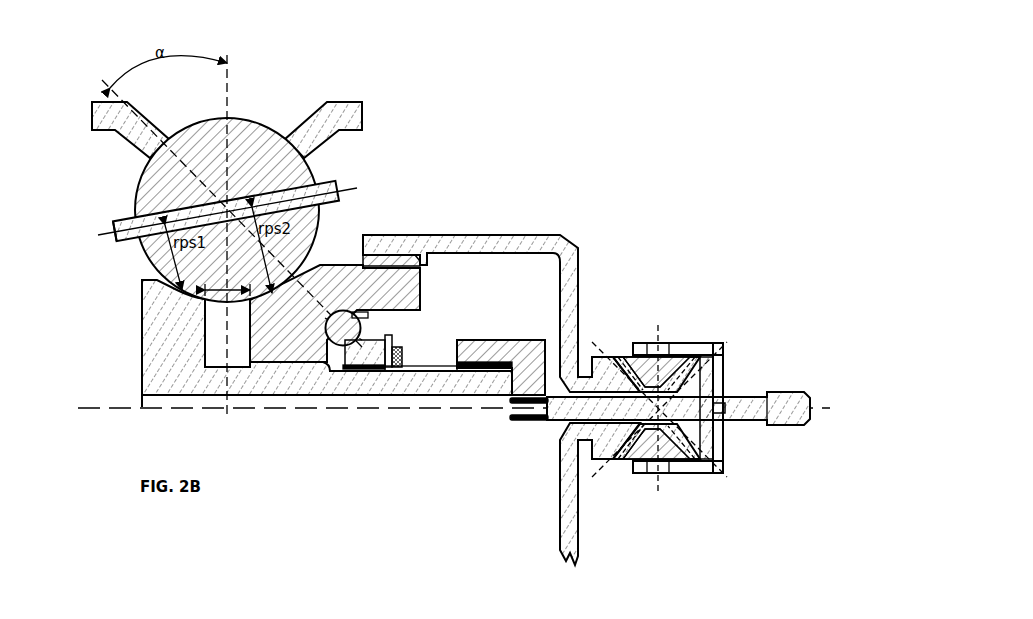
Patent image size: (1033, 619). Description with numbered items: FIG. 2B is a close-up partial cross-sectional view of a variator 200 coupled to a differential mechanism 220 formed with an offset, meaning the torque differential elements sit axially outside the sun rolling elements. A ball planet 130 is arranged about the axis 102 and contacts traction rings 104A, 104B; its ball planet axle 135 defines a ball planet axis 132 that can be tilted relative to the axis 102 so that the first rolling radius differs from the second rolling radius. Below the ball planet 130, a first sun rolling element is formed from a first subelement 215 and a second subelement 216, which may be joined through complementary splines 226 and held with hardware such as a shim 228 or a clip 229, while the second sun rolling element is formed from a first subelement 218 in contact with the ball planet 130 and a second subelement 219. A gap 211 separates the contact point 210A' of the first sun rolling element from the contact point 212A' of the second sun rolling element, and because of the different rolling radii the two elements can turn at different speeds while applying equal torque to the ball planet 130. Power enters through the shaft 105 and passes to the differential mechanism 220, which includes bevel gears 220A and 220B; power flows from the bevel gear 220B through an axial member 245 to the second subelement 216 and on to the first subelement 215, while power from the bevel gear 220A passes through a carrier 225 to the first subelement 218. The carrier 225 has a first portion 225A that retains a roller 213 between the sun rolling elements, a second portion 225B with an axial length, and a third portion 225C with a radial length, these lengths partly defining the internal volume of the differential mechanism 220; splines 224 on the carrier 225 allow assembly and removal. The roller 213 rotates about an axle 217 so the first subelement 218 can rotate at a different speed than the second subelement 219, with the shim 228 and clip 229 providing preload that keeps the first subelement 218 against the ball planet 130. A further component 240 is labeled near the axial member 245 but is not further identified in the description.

The axis 102 is at (92, 407).
The traction ring 104A is at (133, 150).
The traction ring 104B is at (350, 102).
The shaft 105 is at (760, 393).
The ball planet 130 is at (135, 186).
The ball planet axis 132 is at (337, 192).
The ball planet axle 135 is at (118, 242).
The variator 200 is at (645, 110).
The first contact point 210A' is at (130, 305).
The gap 211 is at (218, 298).
The contact point 212A' is at (288, 365).
The roller 213 is at (343, 365).
The first subelement of first sun rolling element 215 is at (142, 368).
The second subelement of first sun rolling element 216 is at (498, 340).
The axle 217 is at (330, 347).
The first subelement of second sun rolling element 218 is at (323, 265).
The second subelement of second sun rolling element 219 is at (360, 358).
The differential mechanism 220 is at (744, 296).
The bevel gear 220A is at (679, 344).
The bevel gear 220B is at (716, 380).
The splines 224 is at (400, 255).
The carrier 225 is at (553, 233).
The first portion of carrier 225A is at (436, 260).
The second portion of carrier 225B is at (454, 231).
The third portion of carrier 225C is at (590, 296).
The complementary splines 226 is at (433, 372).
The shim 228 is at (393, 340).
The clip 229 is at (402, 358).
The upper clamp 240 is at (520, 403).
The axial member 245 is at (548, 422).